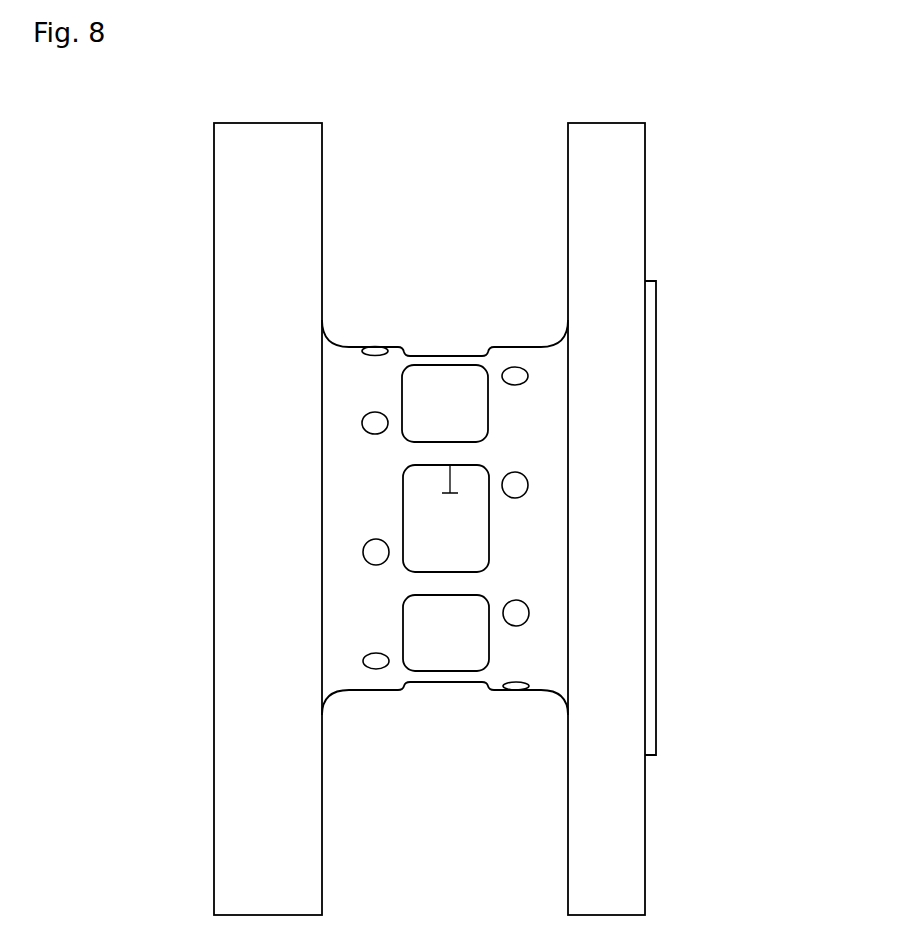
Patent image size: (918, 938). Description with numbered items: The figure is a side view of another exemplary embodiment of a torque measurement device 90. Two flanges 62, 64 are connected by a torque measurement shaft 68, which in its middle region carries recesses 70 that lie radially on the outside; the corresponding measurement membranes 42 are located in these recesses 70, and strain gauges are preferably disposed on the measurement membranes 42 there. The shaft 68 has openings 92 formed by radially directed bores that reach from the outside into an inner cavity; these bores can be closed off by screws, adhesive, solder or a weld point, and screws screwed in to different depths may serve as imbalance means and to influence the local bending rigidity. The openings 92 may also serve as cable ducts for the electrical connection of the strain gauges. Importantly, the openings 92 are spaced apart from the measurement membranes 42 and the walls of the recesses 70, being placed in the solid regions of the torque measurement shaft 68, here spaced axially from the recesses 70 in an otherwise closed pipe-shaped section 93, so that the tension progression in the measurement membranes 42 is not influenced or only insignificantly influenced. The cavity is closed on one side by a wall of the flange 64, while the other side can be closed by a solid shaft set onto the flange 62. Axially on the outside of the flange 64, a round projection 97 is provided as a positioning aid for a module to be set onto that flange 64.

The torque measurement device 90 is at (178, 143).
The flange 62 is at (257, 267).
The flange 64 is at (609, 211).
The round projection 97 is at (648, 423).
The torque measurement shaft 68 is at (375, 385).
The recesses 70 is at (438, 393).
The openings 92 is at (375, 423).
The measurement membranes 42 is at (450, 465).
The pipe-shaped section 93 is at (368, 704).